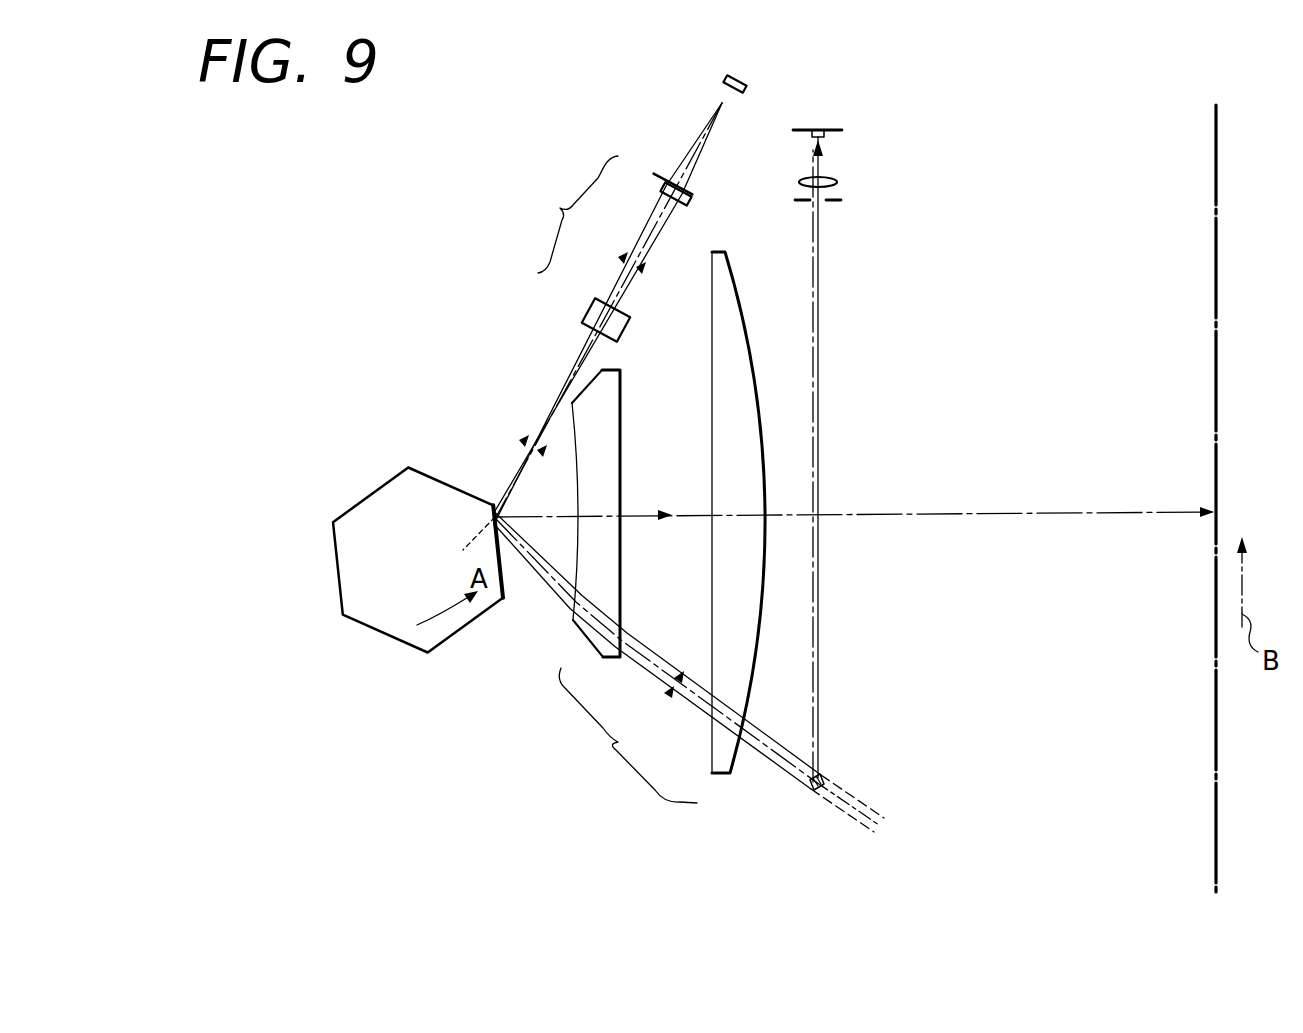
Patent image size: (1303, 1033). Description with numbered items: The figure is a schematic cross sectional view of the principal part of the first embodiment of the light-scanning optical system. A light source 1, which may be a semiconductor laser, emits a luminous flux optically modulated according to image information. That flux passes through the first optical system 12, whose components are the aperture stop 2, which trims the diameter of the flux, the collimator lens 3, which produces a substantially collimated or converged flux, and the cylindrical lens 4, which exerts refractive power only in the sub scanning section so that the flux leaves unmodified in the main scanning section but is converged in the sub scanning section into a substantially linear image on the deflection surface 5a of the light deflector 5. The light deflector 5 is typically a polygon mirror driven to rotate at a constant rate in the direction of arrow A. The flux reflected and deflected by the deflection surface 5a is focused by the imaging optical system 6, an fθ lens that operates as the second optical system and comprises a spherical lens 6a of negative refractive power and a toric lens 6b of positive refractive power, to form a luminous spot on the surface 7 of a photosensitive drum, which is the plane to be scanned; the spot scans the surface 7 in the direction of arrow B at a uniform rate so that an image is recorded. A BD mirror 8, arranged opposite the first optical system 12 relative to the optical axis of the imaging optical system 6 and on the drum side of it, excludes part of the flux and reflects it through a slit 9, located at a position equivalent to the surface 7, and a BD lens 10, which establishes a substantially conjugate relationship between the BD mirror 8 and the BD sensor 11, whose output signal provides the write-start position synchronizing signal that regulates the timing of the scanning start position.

The light source 1 is at (745, 79).
The aperture stop 2 is at (698, 196).
The collimator lens 3 is at (660, 184).
The cylindrical lens 4 is at (590, 305).
The light deflector 5 is at (440, 573).
The deflection surface 5a is at (508, 592).
The imaging optical system 6 is at (662, 527).
The spherical lens 6a is at (597, 640).
The toric lens 6b is at (720, 752).
The surface of a photosensitive drum 7 is at (1215, 880).
The BD mirror 8 is at (815, 793).
The slit 9 is at (845, 200).
The BD lens 10 is at (838, 180).
The BD sensor 11 is at (836, 130).
The first optical system 12 is at (576, 214).